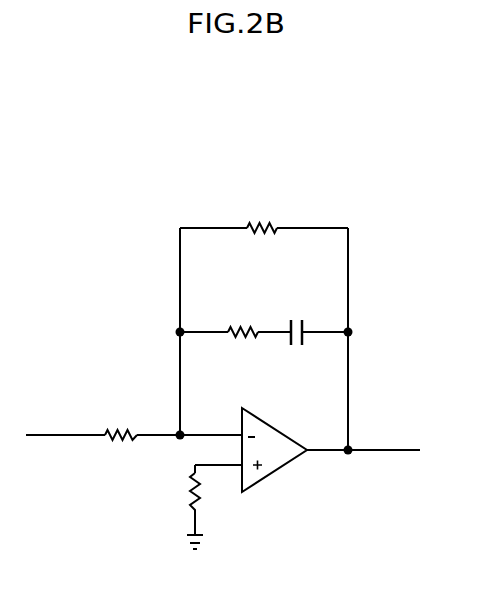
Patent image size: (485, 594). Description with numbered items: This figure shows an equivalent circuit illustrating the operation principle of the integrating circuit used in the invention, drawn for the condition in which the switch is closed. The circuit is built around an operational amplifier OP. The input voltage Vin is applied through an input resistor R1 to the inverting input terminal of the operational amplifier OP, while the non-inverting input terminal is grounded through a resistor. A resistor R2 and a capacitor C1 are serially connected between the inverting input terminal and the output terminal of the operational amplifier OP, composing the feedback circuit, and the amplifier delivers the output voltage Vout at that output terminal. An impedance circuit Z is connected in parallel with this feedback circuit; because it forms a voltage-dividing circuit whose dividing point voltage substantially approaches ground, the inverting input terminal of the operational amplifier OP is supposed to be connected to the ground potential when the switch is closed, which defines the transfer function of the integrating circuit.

The impedance circuit Z is at (262, 216).
The resistor R2 is at (238, 315).
The capacitor C1 is at (296, 315).
The input resistor R1 is at (117, 419).
The operational amplifier OP is at (278, 473).
The input voltage Vin is at (41, 391).
The output voltage Vout is at (407, 427).